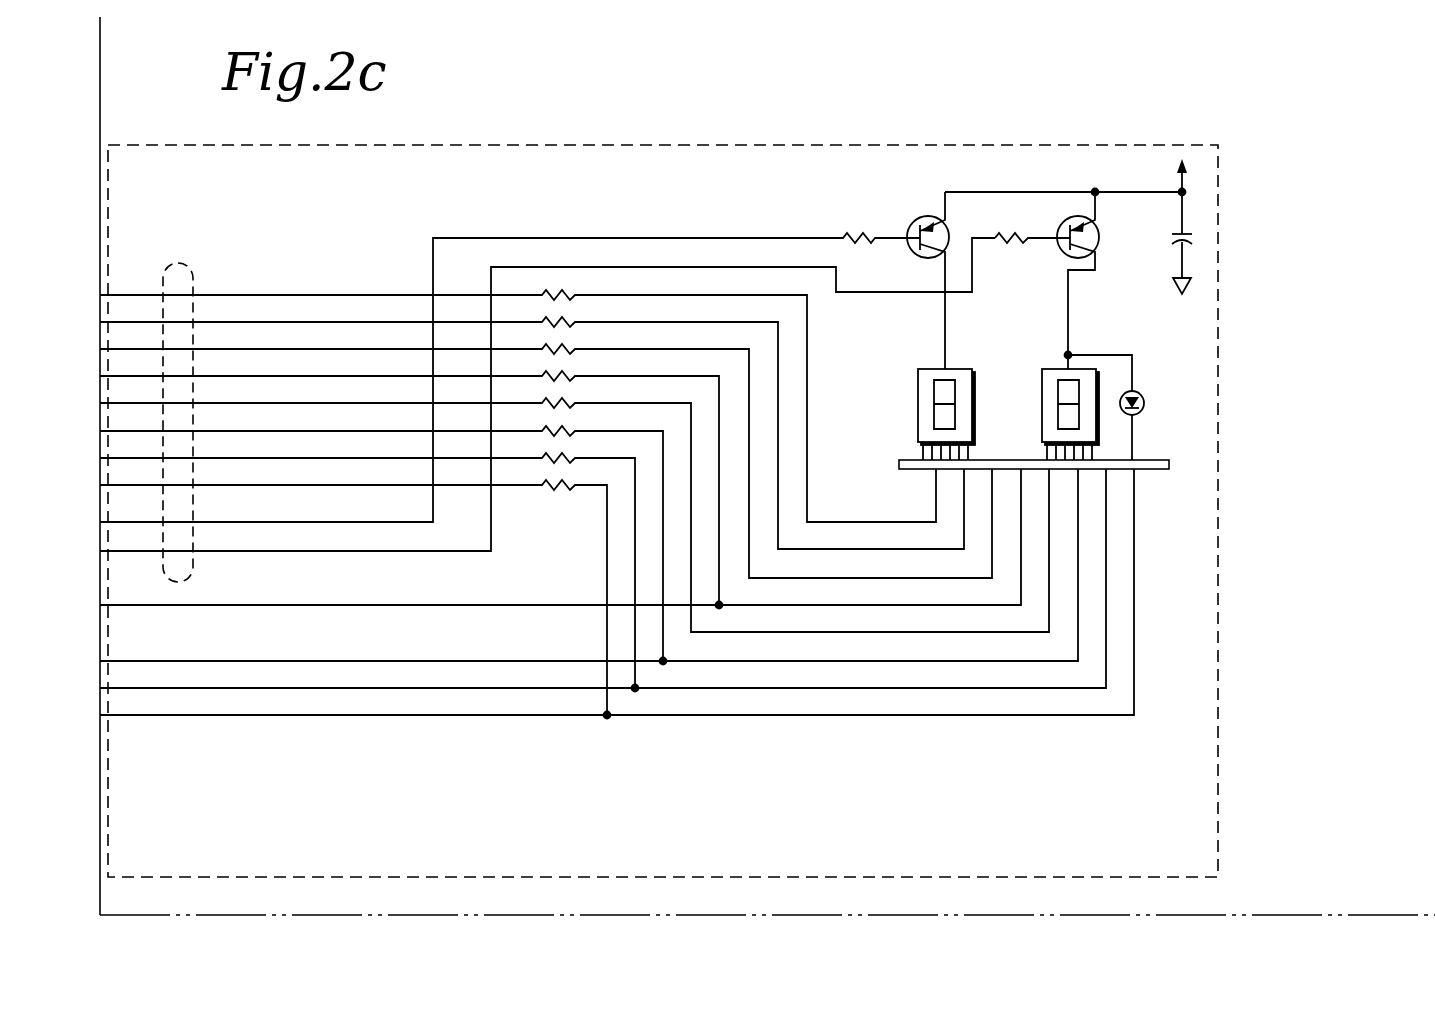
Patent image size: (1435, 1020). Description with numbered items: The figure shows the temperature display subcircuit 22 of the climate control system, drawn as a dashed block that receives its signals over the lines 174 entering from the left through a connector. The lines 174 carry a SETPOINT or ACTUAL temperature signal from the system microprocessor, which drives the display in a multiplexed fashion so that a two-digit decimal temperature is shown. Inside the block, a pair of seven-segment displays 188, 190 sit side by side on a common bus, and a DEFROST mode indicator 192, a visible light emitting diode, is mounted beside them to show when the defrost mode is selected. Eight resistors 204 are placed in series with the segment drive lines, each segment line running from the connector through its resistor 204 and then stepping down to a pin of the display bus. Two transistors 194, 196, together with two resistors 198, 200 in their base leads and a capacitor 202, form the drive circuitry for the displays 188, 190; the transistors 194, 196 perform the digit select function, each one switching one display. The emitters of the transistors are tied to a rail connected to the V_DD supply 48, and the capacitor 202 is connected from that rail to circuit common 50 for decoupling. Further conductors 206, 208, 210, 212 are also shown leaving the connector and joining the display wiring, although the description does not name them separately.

The temperature display 22 is at (346, 200).
The V_DD supply 48 is at (1187, 177).
The circuit common 50 is at (1192, 284).
The lines 174 is at (193, 290).
The seven-segment display 188 is at (918, 370).
The seven-segment display 190 is at (1076, 369).
The DEFROST mode indicator 192 is at (1142, 393).
The transistor 194 is at (912, 222).
The transistor 196 is at (1098, 246).
The resistor 198 is at (845, 233).
The resistor 200 is at (1019, 233).
The capacitor 202 is at (1190, 238).
The resistors 204 is at (559, 497).
The conductor 206 is at (367, 553).
The conductor 208 is at (400, 660).
The conductor 210 is at (350, 688).
The conductor 212 is at (420, 716).